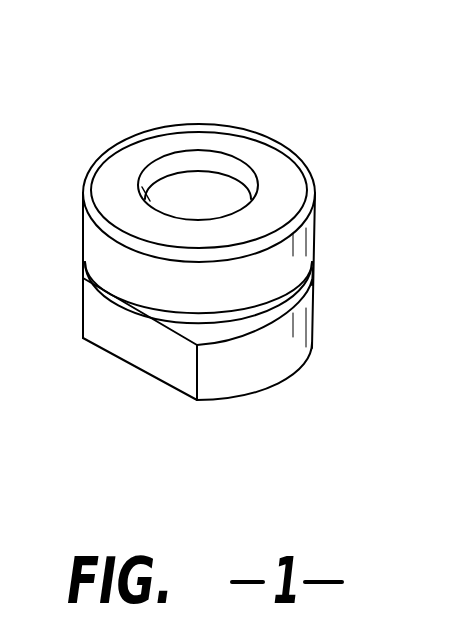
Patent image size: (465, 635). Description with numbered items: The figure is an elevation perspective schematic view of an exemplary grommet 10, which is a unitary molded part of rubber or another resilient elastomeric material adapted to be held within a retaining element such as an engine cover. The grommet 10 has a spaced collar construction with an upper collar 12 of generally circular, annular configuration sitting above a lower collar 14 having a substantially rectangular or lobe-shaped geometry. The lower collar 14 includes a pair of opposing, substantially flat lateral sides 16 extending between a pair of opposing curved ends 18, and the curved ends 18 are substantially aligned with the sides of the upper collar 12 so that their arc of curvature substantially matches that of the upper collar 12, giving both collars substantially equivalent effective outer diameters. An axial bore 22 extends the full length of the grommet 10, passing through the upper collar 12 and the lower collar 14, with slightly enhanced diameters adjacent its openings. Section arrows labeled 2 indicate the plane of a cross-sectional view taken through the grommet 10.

The grommet 10 is at (245, 217).
The upper collar 12 is at (310, 172).
The lower collar 14 is at (316, 276).
The flat lateral sides 16 is at (153, 353).
The curved ends 18 is at (268, 358).
The axial bore 22 is at (201, 200).
The section line 2- 2 is at (213, 90).